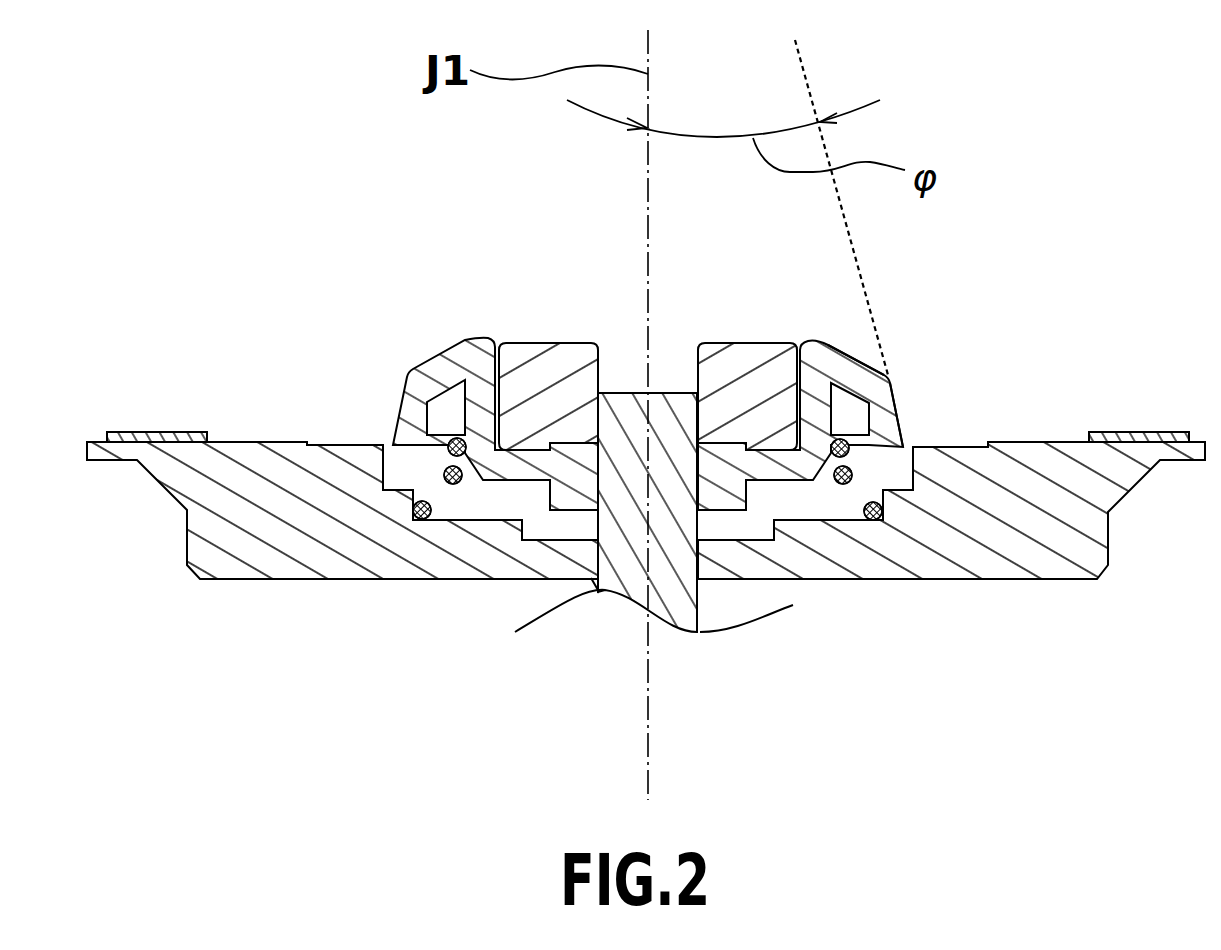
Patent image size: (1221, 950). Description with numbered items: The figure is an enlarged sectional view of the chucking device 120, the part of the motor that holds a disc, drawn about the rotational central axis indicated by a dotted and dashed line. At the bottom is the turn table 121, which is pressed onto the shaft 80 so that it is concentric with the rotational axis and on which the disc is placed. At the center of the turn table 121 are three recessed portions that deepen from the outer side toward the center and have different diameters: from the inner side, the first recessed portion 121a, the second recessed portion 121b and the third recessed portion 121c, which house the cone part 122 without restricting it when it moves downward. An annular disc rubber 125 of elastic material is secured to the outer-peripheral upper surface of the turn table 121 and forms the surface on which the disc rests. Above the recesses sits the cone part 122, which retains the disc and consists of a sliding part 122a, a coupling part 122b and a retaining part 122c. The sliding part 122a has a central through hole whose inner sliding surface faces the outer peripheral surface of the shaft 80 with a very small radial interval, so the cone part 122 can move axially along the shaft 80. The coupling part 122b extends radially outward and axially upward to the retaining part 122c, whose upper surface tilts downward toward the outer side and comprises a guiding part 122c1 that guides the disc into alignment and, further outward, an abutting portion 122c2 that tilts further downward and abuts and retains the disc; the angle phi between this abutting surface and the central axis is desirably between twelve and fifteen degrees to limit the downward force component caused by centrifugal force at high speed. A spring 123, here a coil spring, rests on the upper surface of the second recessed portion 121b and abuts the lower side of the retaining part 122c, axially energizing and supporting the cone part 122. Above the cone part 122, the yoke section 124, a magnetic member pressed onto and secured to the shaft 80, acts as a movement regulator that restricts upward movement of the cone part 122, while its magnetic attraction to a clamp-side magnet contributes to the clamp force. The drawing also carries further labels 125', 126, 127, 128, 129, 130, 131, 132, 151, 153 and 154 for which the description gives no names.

The chucking device 120 is at (300, 168).
The turn table 121 is at (330, 540).
The first recessed portion 121a is at (740, 543).
The second recessed portion 121b is at (813, 520).
The third recessed portion 121c is at (908, 515).
The cone part 122 is at (806, 335).
The sliding part 122a is at (582, 460).
The coupling part 122b is at (480, 400).
The retaining part 122c is at (437, 394).
The guiding part 122c1 is at (855, 358).
The abutting portion 122c2 is at (898, 410).
The spring 123 is at (498, 497).
The yoke section 124 is at (553, 337).
The disc rubber 125 is at (162, 358).
The outer flange 125' is at (96, 327).
The gap 126 is at (391, 447).
The bottom surface 127 is at (263, 579).
The shaft edge 128 is at (607, 592).
The shaft end portion 129 is at (568, 613).
The clearance 130 is at (497, 345).
The clearance 131 is at (628, 372).
The clearance 132 is at (490, 440).
The step 151 is at (390, 440).
The balls 153 is at (455, 490).
The recess corner 154 is at (555, 518).
The shaft 80 is at (630, 578).